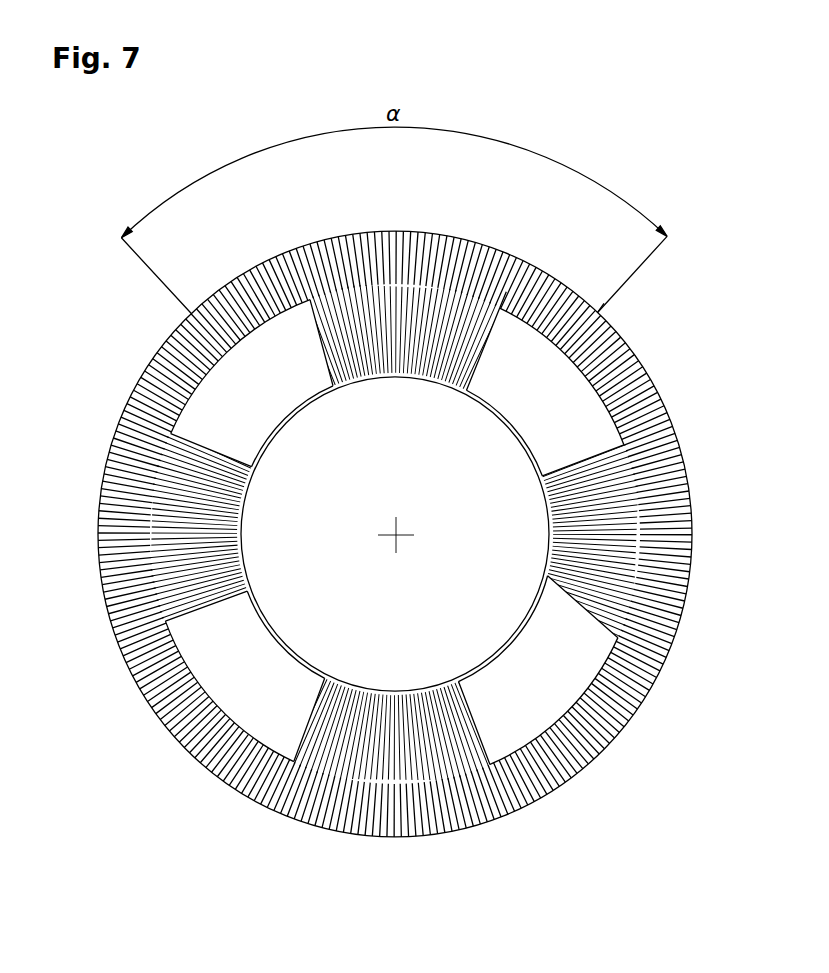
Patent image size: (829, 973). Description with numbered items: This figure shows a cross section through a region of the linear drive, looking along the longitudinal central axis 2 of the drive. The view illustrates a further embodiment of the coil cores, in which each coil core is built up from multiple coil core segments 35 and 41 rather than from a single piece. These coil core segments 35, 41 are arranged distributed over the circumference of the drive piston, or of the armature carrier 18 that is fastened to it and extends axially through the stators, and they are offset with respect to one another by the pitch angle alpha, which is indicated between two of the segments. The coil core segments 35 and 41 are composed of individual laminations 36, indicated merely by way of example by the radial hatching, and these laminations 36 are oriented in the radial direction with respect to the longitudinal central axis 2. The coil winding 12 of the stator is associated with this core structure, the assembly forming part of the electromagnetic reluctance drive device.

The longitudinal central axis 2 is at (392, 540).
The coil winding 12 is at (593, 435).
The armature carrier 18 is at (495, 557).
The coil core segments 35 is at (498, 268).
The laminations 36 is at (503, 278).
The coil core segments 41 is at (160, 357).